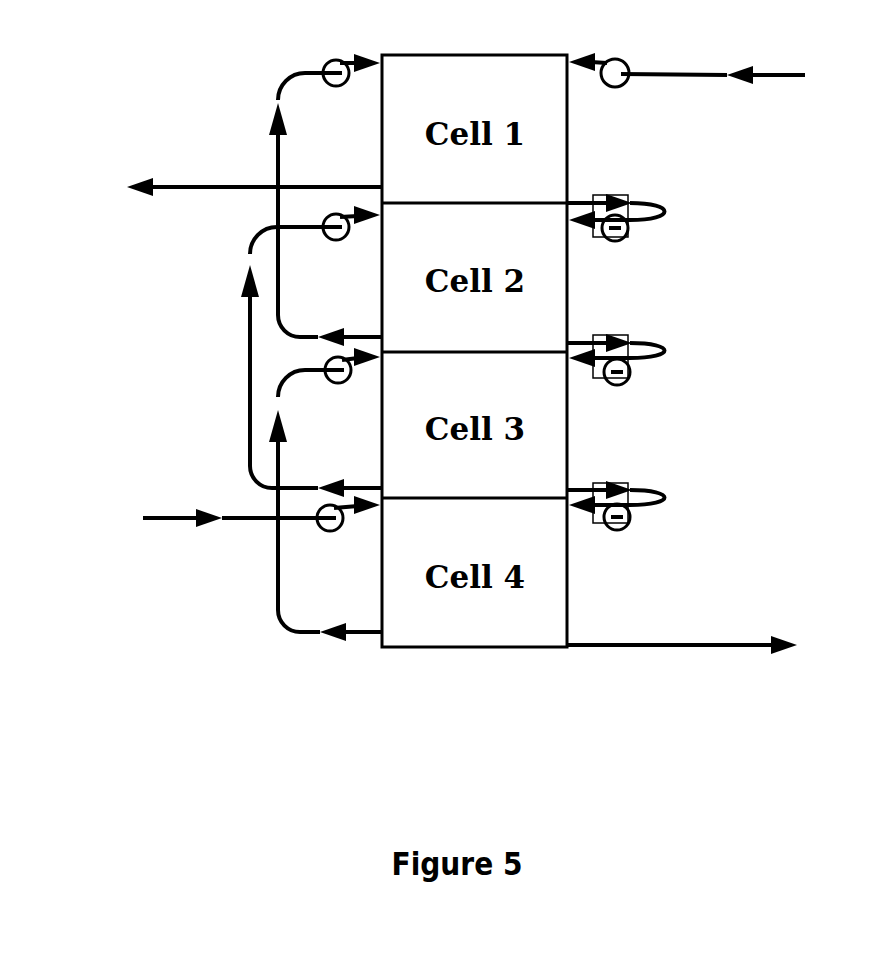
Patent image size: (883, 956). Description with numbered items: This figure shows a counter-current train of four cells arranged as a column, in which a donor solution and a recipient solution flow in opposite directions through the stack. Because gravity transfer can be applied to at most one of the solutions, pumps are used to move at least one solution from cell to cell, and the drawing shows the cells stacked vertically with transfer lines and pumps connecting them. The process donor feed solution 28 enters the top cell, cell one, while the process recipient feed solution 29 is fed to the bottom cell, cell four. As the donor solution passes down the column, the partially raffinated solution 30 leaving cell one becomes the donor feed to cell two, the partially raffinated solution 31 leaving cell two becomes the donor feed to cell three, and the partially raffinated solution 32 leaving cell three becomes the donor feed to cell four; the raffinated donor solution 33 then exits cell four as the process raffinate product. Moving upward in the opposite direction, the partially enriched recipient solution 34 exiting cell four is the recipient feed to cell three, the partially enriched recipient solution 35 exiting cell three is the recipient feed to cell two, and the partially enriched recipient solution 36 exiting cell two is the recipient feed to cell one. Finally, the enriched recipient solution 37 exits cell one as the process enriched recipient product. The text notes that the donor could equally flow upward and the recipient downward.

The process donor feed solution 28 is at (760, 75).
The process recipient feed solution 29 is at (178, 525).
The partially raffinated solution 30 is at (665, 212).
The partially raffinated solution 31 is at (667, 363).
The partially raffinated solution 32 is at (675, 505).
The raffinated donor solution 33 is at (753, 632).
The partially enriched recipient solution 34 is at (276, 552).
The partially enriched recipient solution 35 is at (237, 378).
The partially enriched recipient solution 36 is at (262, 132).
The enriched recipient solution 37 is at (170, 190).